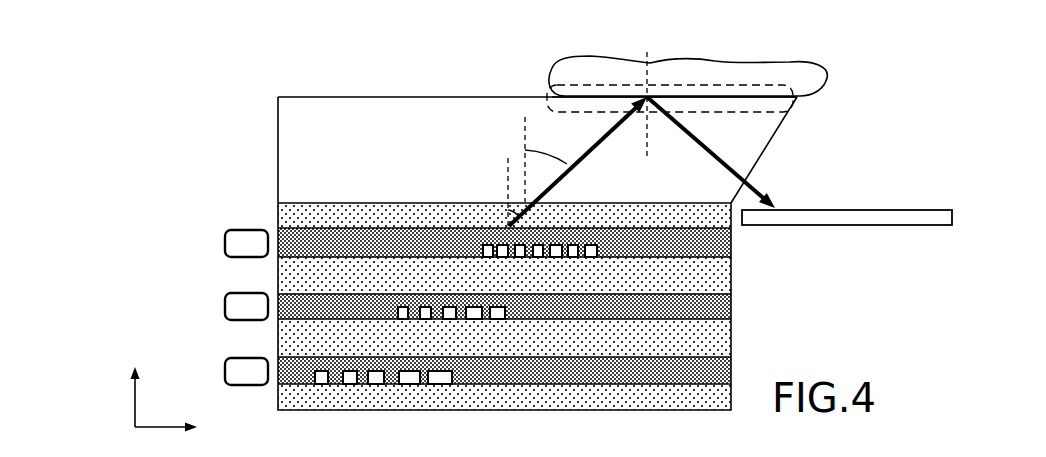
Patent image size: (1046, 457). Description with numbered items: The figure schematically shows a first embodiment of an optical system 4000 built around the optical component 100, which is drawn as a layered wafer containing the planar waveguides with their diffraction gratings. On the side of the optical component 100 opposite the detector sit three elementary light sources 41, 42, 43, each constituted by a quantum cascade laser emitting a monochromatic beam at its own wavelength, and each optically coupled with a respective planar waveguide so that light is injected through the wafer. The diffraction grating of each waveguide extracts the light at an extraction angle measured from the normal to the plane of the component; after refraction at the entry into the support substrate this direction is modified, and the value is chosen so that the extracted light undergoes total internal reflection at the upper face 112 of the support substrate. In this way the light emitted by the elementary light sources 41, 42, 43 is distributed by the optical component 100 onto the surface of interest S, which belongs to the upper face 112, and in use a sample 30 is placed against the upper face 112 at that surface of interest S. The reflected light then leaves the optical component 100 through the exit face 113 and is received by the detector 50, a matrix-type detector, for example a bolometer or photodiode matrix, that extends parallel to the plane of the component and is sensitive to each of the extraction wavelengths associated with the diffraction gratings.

The optical system 4000 is at (148, 129).
The optical component 100 is at (242, 100).
The upper face 112 is at (370, 97).
The exit face 113 is at (780, 143).
The sample 30 is at (797, 73).
The surface of interest S is at (802, 103).
The detector 50 is at (880, 217).
The elementary light source 43 is at (232, 242).
The elementary light source 42 is at (232, 306).
The elementary light source 41 is at (232, 372).